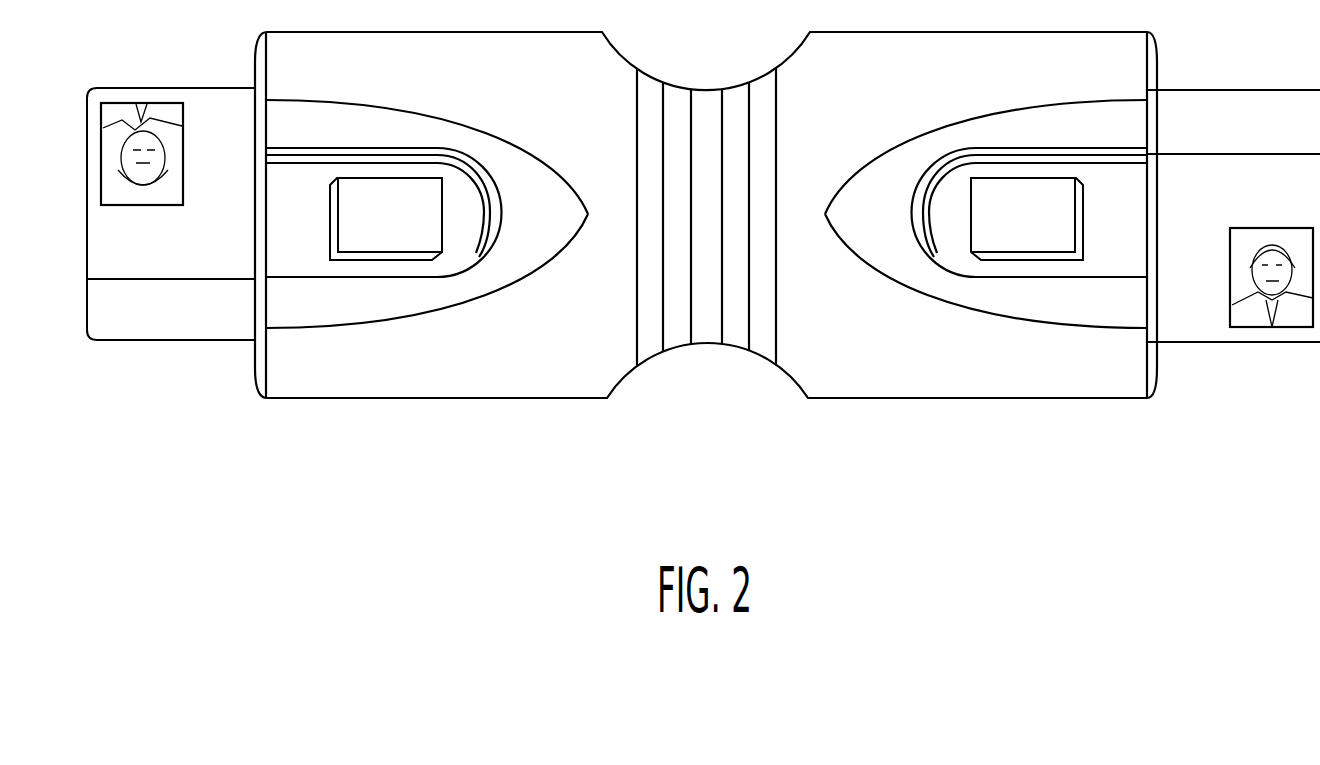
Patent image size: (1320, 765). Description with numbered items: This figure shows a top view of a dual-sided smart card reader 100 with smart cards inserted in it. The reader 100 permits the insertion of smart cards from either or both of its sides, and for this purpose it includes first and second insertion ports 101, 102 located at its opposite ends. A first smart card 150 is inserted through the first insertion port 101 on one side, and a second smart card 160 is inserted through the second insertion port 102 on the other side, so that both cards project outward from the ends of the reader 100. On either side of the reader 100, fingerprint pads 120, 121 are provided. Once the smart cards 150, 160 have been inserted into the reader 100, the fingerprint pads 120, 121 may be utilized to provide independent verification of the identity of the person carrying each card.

The dual-sided smart card reader 100 is at (568, 380).
The first insertion port 101 is at (241, 347).
The second insertion port 102 is at (1167, 353).
The fingerprint pad 120 is at (378, 228).
The fingerprint pad 121 is at (997, 227).
The first smart card 150 is at (122, 325).
The second smart card 160 is at (1217, 332).